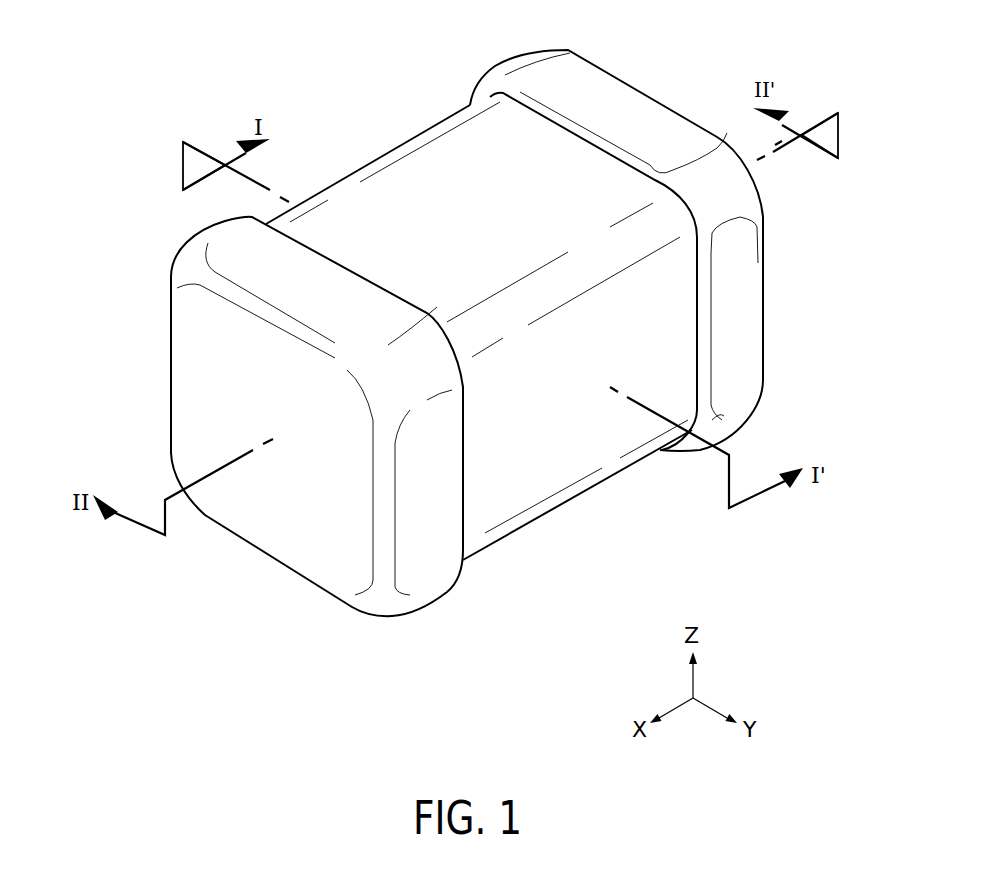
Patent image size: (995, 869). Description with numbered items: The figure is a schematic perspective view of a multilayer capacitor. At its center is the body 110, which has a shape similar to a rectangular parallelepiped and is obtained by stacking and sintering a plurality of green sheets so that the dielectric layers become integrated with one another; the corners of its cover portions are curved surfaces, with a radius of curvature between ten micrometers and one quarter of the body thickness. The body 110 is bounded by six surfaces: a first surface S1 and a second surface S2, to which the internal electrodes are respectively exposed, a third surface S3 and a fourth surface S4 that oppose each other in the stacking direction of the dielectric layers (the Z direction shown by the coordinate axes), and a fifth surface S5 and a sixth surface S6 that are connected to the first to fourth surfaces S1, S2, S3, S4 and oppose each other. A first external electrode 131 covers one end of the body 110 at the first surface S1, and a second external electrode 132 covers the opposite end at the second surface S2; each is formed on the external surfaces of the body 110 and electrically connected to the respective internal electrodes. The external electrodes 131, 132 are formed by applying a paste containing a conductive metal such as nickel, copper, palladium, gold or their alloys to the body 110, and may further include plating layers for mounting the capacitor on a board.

The body 110 is at (394, 161).
The first external electrode 131 is at (203, 382).
The second external electrode 132 is at (610, 100).
The first surface S1 is at (297, 541).
The second surface S2 is at (746, 269).
The third surface S3 is at (458, 139).
The fourth surface S4 is at (492, 505).
The fifth surface S5 is at (390, 202).
The sixth surface S6 is at (581, 452).